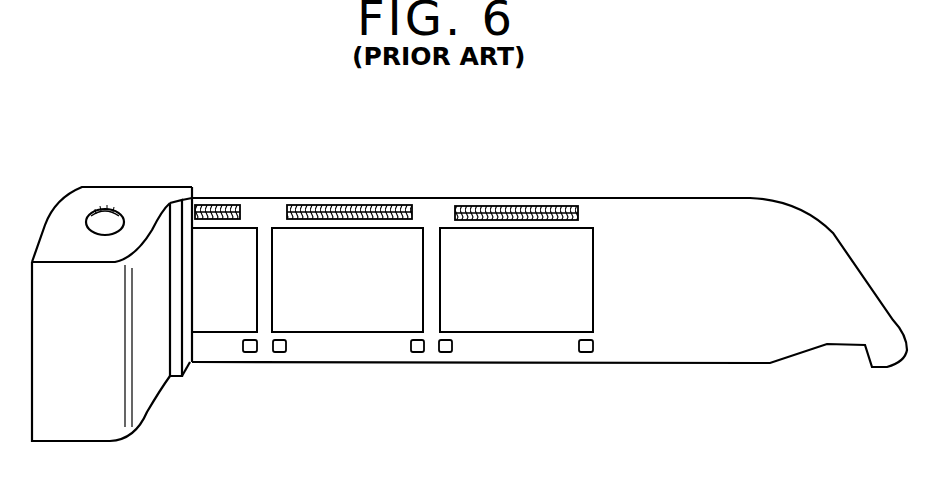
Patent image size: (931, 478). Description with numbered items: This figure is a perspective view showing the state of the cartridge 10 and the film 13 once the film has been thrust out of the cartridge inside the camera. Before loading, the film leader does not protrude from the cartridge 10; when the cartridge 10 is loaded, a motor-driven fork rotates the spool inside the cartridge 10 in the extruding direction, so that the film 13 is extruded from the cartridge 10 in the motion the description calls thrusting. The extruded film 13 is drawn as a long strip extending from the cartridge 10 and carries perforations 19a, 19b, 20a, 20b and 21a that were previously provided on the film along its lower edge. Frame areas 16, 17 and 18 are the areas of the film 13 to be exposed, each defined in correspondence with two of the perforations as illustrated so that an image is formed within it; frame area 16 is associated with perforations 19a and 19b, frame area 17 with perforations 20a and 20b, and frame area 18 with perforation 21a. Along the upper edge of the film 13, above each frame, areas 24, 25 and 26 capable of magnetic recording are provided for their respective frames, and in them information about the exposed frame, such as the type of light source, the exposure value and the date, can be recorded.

The cartridge 10 is at (150, 400).
The film 13 is at (755, 345).
The frame area 16 is at (547, 242).
The frame area 17 is at (370, 240).
The frame area 18 is at (248, 233).
The perforation 19a is at (587, 352).
The perforation 19b is at (445, 352).
The perforation 20a is at (417, 352).
The perforation 20b is at (278, 352).
The perforation 21a is at (252, 352).
The magnetic recording area 24 is at (478, 208).
The magnetic recording area 25 is at (312, 208).
The magnetic recording area 26 is at (208, 208).